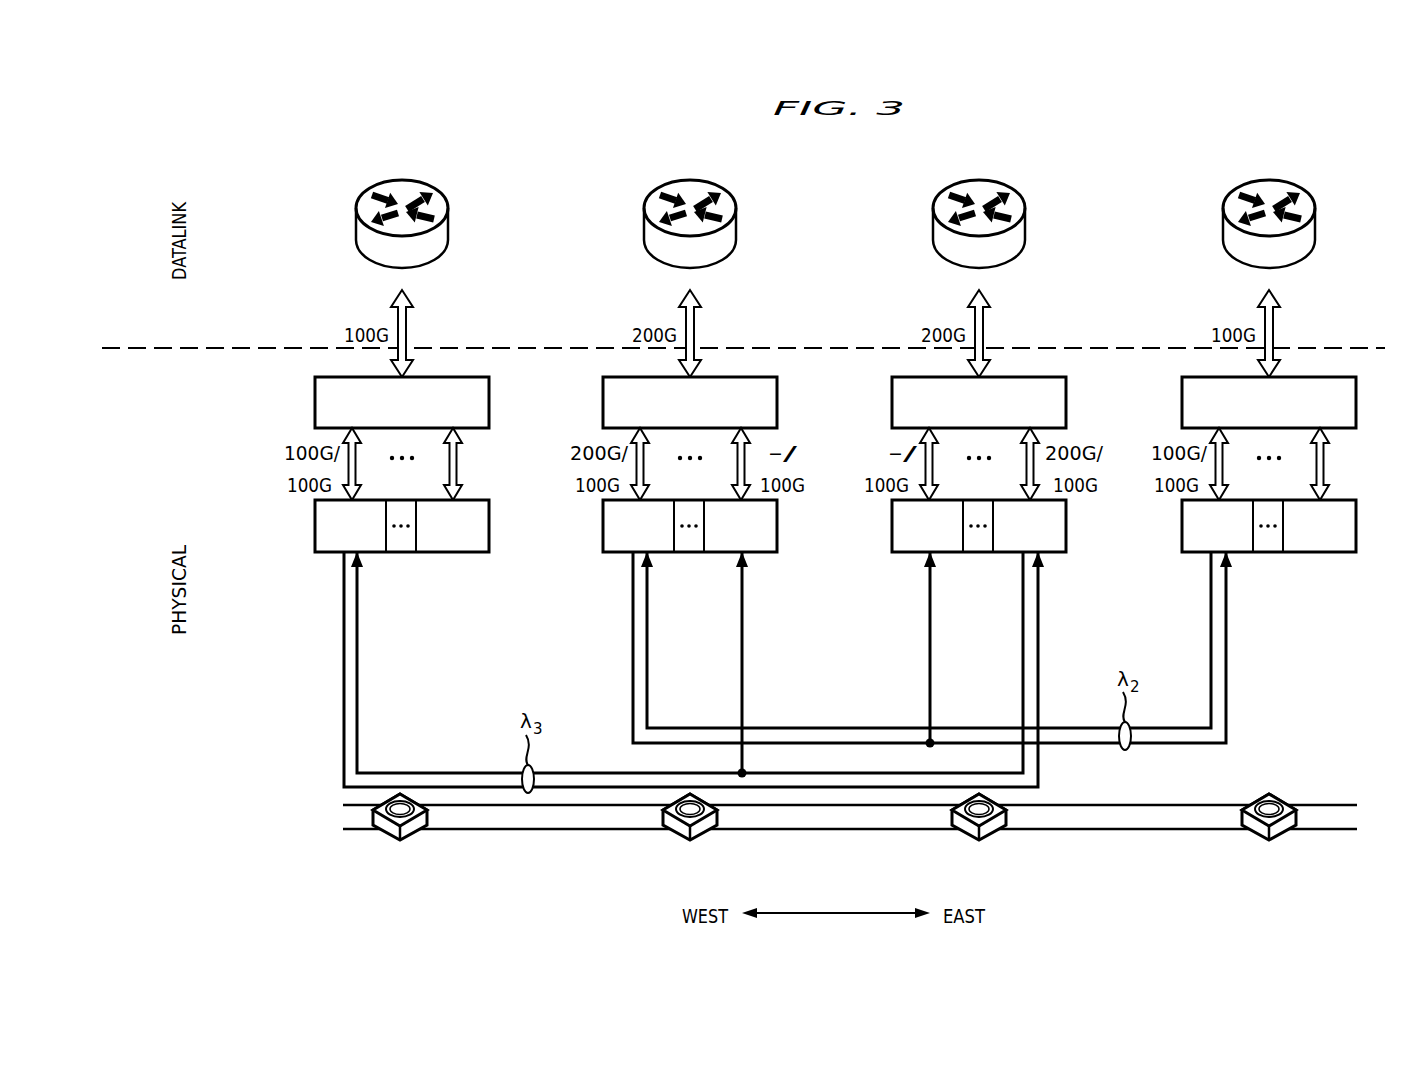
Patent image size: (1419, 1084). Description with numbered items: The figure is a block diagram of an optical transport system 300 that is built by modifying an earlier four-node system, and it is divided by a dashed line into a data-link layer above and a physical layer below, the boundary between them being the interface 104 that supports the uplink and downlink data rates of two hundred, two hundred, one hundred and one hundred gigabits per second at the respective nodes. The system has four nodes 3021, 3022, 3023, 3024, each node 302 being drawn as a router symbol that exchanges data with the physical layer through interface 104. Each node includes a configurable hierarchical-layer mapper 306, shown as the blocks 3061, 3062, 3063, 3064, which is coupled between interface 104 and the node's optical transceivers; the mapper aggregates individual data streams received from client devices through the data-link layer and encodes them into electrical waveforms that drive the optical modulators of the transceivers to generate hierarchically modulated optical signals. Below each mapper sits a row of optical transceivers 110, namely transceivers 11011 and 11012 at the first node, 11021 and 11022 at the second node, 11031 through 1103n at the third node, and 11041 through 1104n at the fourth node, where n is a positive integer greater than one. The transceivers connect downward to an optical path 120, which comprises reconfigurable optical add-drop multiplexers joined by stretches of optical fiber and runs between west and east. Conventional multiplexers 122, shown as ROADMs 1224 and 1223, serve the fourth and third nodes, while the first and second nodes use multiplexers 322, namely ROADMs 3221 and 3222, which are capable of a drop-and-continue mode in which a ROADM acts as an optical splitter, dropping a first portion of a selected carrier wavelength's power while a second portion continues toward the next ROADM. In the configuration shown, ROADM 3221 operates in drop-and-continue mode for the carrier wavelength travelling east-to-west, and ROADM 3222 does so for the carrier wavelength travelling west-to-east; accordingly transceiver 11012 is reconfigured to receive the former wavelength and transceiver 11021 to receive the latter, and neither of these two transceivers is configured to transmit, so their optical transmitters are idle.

The optical transport system 300 is at (853, 156).
The interface 104 is at (1350, 348).
The node 302 is at (857, 212).
The node 3021 is at (712, 184).
The node 3022 is at (1001, 184).
The node 3023 is at (1291, 184).
The node 3024 is at (424, 184).
The configurable hierarchical-layer mapper 306 is at (799, 402).
The configurable hierarchical-layer mapper 3061 is at (603, 403).
The configurable hierarchical-layer mapper 3062 is at (892, 403).
The configurable hierarchical-layer mapper 3063 is at (1182, 403).
The configurable hierarchical-layer mapper 3064 is at (315, 403).
The optical transceiver 110 is at (846, 554).
The optical transceiver 11011 is at (618, 552).
The optical transceiver 11012 is at (758, 552).
The optical transceiver 11021 is at (907, 552).
The optical transceiver 11022 is at (1050, 552).
The optical transceiver 11031 is at (1197, 552).
The optical transceiver 1103n is at (1340, 552).
The optical transceiver 11041 is at (330, 552).
The optical transceiver 1104n is at (450, 552).
The optical path 120 is at (318, 813).
The reconfigurable optical add-drop multiplexer 122 is at (869, 836).
The reconfigurable optical add-drop multiplexer 1223 is at (1294, 828).
The reconfigurable optical add-drop multiplexer 1224 is at (425, 828).
The reconfigurable optical add-drop multiplexer 322 is at (869, 836).
The reconfigurable optical add-drop multiplexer 3221 is at (715, 828).
The reconfigurable optical add-drop multiplexer 3222 is at (1004, 828).